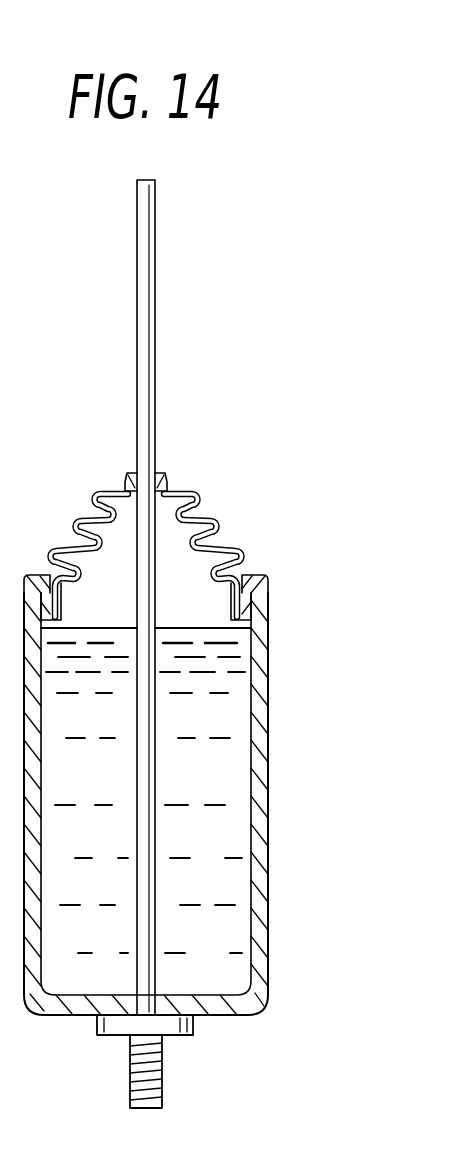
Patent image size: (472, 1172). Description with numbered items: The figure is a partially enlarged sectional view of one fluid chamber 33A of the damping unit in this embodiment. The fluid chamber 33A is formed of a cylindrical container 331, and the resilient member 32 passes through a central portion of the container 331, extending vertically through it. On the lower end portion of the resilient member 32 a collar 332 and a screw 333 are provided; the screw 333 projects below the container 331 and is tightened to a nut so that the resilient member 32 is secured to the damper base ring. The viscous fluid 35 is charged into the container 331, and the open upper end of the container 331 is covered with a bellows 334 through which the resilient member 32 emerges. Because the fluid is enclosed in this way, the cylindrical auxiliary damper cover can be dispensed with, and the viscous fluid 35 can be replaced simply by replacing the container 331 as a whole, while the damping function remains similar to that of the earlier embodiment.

The resilient member 32 is at (147, 338).
The fluid chamber 33A is at (188, 517).
The bellows 334 is at (240, 552).
The cylindrical container 331 is at (262, 680).
The viscous fluid 35 is at (235, 840).
The collar 332 is at (193, 1025).
The screw 333 is at (163, 1093).